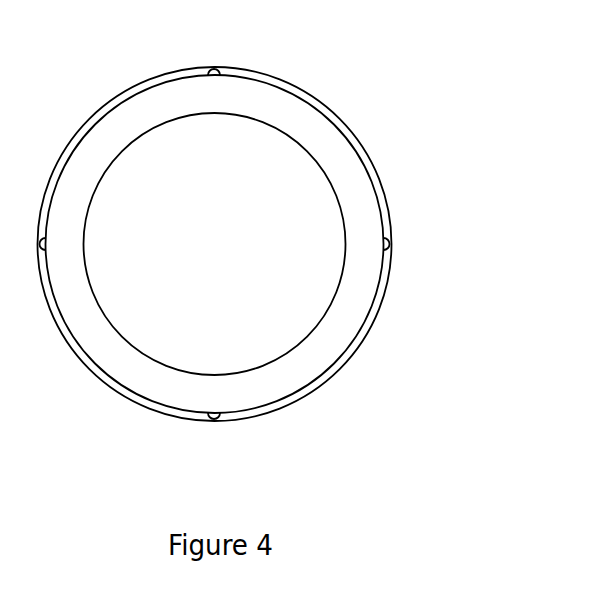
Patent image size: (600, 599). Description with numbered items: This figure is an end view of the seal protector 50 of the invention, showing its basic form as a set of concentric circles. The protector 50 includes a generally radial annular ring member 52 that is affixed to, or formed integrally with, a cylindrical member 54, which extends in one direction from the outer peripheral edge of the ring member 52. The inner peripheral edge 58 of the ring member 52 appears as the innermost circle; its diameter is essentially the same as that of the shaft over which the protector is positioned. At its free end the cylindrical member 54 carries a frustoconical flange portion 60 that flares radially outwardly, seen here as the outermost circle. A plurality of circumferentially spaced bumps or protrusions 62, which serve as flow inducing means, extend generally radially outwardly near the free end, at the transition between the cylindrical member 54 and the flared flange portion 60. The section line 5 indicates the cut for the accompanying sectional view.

The valve seat ring assembly 50 is at (254, 248).
The annular ring body 52 is at (365, 213).
The intermediate circumferential edge 54 is at (320, 108).
The inner circular edge 58 is at (187, 117).
The outer circumferential edge 60 is at (264, 75).
The locating tabs 62 is at (390, 242).
The section line 5- 5 is at (210, 52).